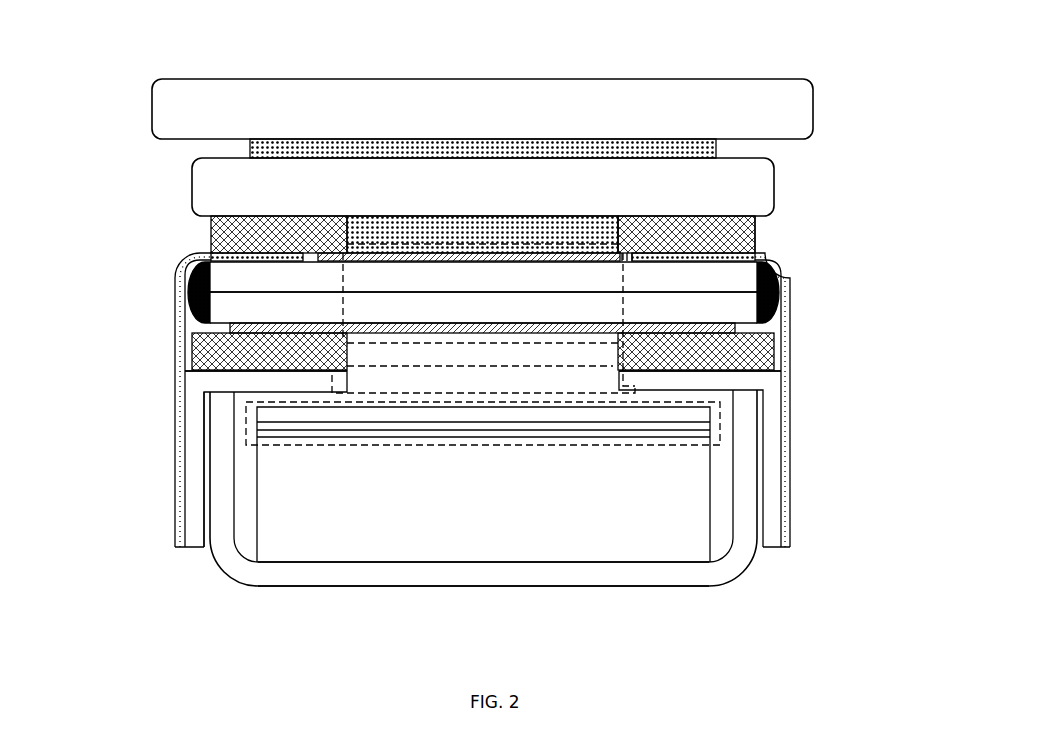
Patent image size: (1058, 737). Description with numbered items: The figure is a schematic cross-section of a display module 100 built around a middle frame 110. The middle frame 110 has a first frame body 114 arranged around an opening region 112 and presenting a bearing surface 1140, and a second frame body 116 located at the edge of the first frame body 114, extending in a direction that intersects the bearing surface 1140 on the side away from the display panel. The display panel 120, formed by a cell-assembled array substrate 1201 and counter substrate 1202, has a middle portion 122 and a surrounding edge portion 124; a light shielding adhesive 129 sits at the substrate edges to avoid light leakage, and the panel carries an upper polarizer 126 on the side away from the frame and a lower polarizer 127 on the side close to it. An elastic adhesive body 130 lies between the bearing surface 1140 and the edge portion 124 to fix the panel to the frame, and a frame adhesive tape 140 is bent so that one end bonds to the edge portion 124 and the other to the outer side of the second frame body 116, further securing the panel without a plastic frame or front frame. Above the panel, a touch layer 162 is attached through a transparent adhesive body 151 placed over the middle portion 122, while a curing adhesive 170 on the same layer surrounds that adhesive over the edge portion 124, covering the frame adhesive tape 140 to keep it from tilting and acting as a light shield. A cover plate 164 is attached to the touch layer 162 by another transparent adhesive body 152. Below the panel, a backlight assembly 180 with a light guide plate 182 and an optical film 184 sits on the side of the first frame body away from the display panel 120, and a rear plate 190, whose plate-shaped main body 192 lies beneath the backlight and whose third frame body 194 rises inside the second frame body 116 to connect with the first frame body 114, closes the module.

The display module 100 is at (486, 622).
The middle frame 110 is at (507, 400).
The opening region 112 is at (762, 318).
The first frame body 114 is at (728, 382).
The second frame body 116 is at (778, 410).
The bearing surface 1140 is at (268, 370).
The display panel 120 is at (490, 298).
The array substrate 1201 is at (650, 307).
The counter substrate 1202 is at (638, 273).
The middle portion 122 is at (312, 273).
The edge portion 124 is at (248, 242).
The upper polarizer 126 is at (410, 253).
The lower polarizer 127 is at (405, 325).
The light shielding adhesive 129 is at (187, 290).
The elastic adhesive body 130 is at (197, 342).
The frame adhesive tape 140 is at (180, 447).
The transparent adhesive body 151 is at (595, 227).
The transparent adhesive body 152 is at (540, 152).
The touch layer 162 is at (717, 197).
The cover plate 164 is at (347, 108).
The curing adhesive 170 is at (677, 217).
The backlight assembly 180 is at (504, 504).
The light guide plate 182 is at (635, 497).
The optical film 184 is at (670, 438).
The rear plate 190 is at (407, 504).
The plate-shaped main body 192 is at (308, 572).
The third frame body 194 is at (227, 490).